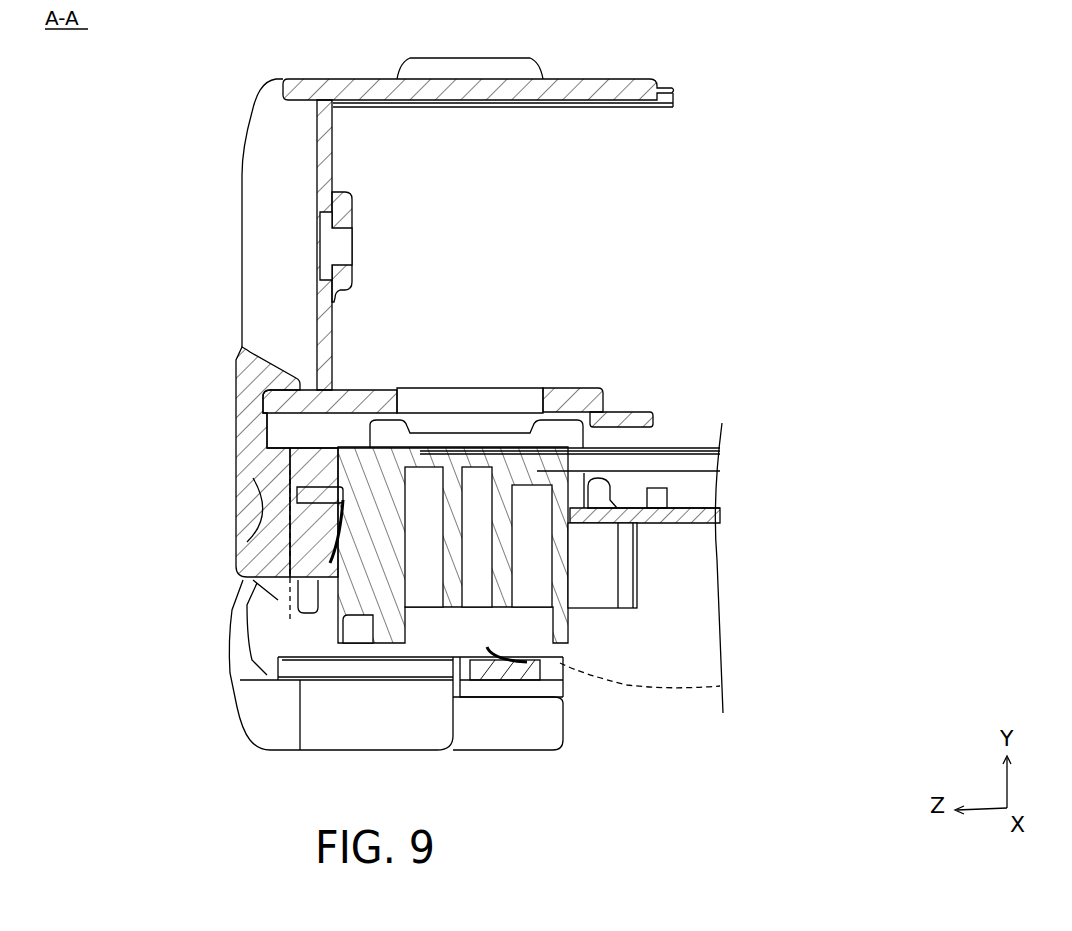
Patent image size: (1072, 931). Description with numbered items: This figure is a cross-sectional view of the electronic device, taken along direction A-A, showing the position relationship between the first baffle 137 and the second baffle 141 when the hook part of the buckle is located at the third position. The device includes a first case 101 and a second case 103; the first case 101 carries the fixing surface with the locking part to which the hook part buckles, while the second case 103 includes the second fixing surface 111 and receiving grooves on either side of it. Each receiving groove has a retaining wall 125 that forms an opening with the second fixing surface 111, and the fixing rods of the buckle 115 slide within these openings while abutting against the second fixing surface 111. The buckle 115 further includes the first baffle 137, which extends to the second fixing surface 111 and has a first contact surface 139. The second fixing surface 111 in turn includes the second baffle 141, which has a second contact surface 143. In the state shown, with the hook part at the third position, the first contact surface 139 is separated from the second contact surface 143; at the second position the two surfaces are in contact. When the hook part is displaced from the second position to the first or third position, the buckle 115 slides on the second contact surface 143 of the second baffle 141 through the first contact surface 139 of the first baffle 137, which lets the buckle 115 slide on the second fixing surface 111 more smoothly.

The first case 101 is at (367, 78).
The second case 103 is at (267, 725).
The second fixing surface 111 is at (377, 600).
The buckle 115 is at (243, 470).
The retaining wall 125 is at (240, 640).
The first baffle 137 is at (343, 528).
The first contact surface 139 is at (330, 542).
The second baffle 141 is at (345, 528).
The second contact surface 143 is at (345, 562).